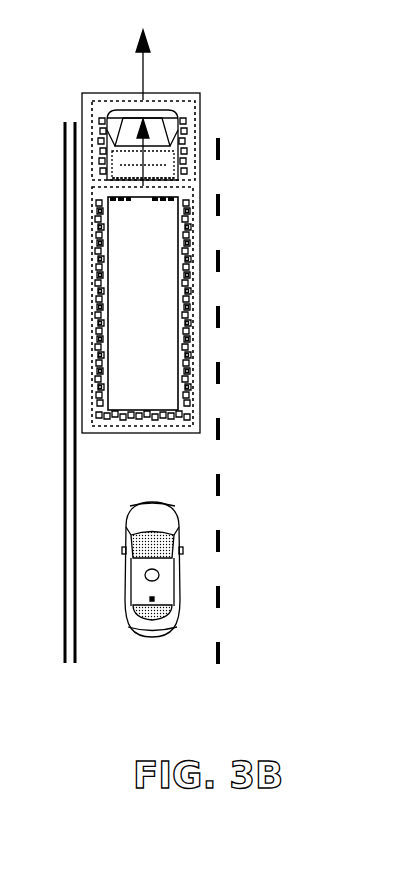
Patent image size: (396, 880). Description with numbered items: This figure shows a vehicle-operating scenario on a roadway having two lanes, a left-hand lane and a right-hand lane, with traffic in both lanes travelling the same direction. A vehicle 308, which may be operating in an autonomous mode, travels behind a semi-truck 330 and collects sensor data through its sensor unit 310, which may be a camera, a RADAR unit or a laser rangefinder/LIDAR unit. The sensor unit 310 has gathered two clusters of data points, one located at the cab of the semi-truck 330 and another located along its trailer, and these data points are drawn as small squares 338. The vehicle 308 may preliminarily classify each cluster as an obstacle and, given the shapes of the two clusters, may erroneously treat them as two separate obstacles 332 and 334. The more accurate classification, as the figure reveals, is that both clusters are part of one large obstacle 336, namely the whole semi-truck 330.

The vehicle 308 is at (153, 503).
The sensor unit 310 is at (146, 579).
The semi-truck 330 is at (180, 345).
The separate obstacle 332 is at (193, 265).
The separate obstacle 334 is at (195, 122).
The large obstacle 336 is at (82, 93).
The small squares 338 is at (178, 415).